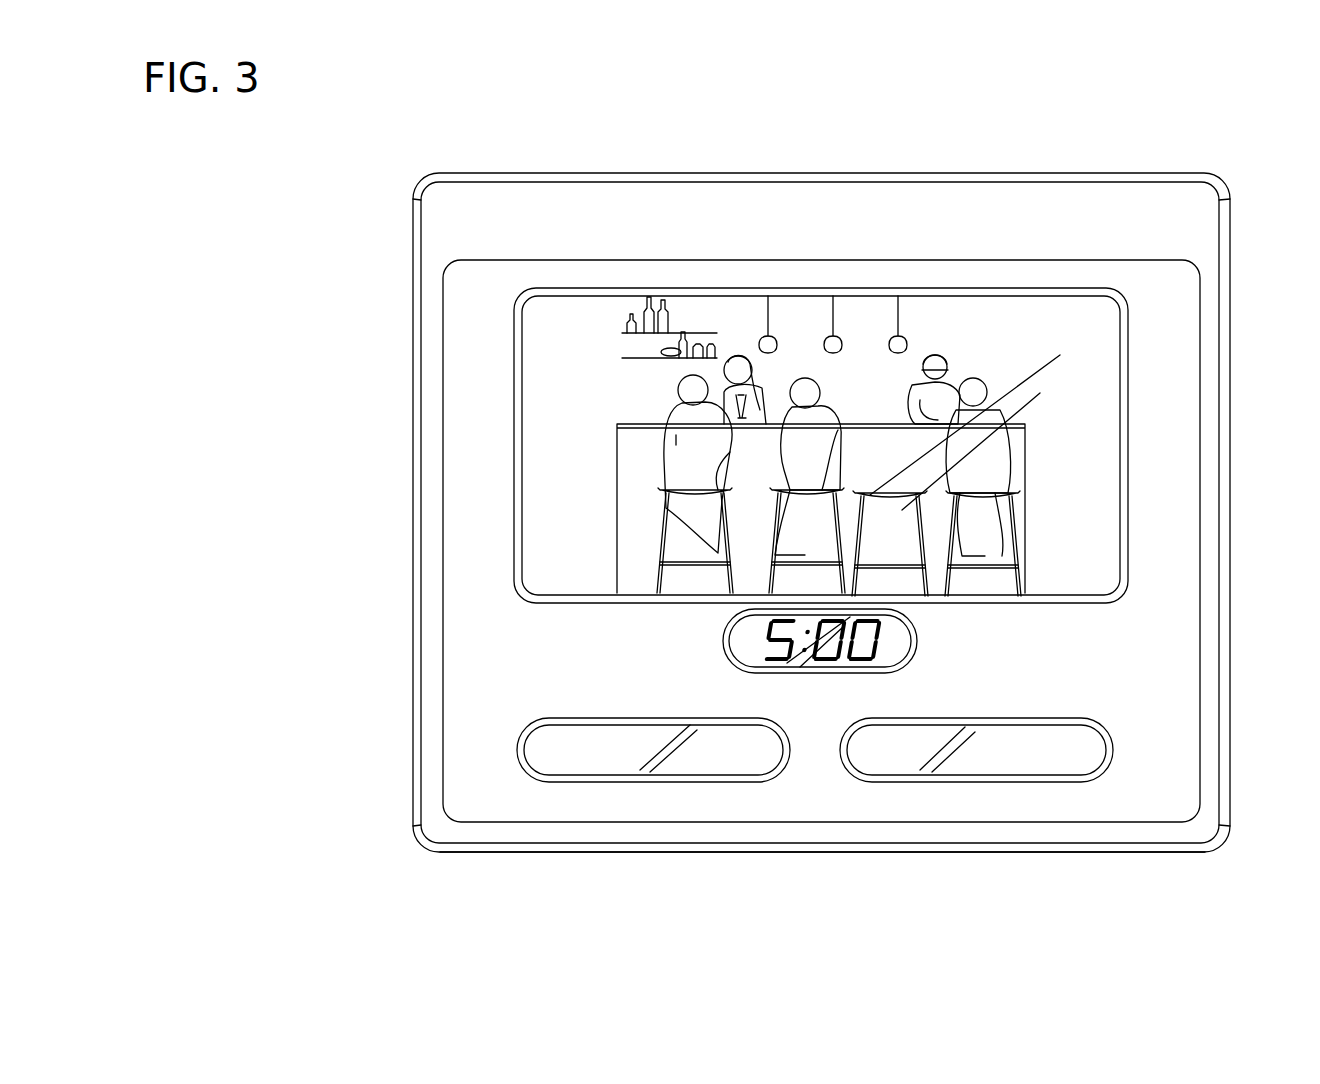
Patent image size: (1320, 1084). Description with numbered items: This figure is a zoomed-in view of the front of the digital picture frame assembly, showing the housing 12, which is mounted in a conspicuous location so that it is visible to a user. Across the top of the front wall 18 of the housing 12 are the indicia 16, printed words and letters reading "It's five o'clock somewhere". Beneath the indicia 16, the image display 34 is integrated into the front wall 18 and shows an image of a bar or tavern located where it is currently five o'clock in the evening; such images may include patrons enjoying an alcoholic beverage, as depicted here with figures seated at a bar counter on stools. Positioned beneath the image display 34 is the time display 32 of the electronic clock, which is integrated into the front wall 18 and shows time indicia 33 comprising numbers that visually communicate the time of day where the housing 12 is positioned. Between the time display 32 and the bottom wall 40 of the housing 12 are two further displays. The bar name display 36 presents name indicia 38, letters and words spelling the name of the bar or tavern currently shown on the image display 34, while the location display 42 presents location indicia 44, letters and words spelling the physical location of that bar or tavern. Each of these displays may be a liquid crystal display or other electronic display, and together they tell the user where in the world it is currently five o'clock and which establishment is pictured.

The housing 12 is at (1221, 178).
The indicia 16 is at (662, 188).
The front wall 18 is at (453, 348).
The time display 32 is at (820, 674).
The time indicia 33 is at (742, 638).
The image display 34 is at (524, 294).
The bar name display 36 is at (672, 783).
The name indicia 38 is at (740, 790).
The bottom wall 40 is at (1067, 853).
The location display 42 is at (1030, 782).
The location indicia 44 is at (934, 790).